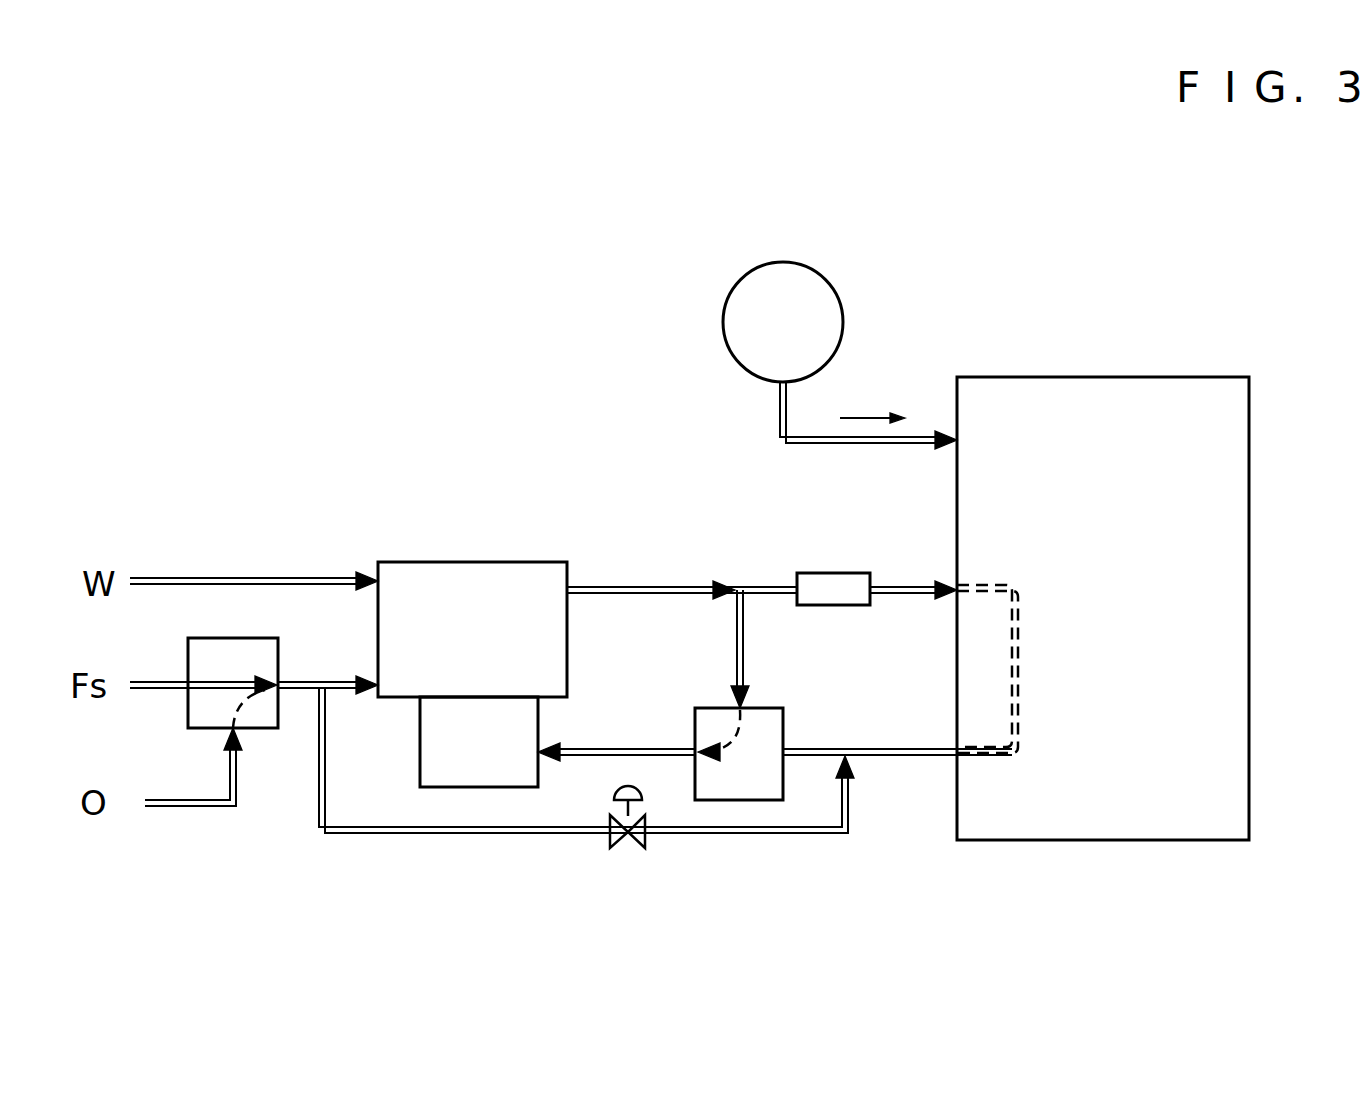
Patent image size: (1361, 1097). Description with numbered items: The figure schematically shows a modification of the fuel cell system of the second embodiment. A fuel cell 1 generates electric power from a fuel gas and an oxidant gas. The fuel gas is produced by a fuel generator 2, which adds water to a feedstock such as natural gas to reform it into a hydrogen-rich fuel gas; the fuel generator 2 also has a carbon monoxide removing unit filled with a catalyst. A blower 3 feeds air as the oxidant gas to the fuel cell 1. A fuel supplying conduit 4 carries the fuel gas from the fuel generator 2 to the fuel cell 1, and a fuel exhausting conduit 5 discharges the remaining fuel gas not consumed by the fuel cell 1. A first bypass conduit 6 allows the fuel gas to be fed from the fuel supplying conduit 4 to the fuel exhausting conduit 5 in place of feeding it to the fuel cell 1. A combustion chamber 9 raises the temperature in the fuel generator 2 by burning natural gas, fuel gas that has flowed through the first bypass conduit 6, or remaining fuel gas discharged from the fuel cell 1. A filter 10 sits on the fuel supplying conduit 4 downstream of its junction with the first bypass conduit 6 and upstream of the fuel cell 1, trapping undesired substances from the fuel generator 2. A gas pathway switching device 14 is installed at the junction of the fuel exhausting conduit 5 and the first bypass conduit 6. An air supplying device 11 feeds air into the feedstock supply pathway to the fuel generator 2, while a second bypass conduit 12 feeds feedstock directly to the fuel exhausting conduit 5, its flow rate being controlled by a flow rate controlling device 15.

The fuel cell 1 is at (1145, 395).
The fuel generator 2 is at (472, 629).
The blower 3 is at (840, 355).
The fuel supplying conduit 4 is at (763, 585).
The fuel exhausting conduit 5 is at (816, 750).
The first bypass conduit 6 is at (746, 648).
The combustion chamber 9 is at (479, 742).
The filter 10 is at (840, 575).
The air supplying device 11 is at (280, 650).
The second bypass conduit 12 is at (447, 834).
The gas pathway switching device 14 is at (783, 710).
The flow rate controlling device 15 is at (640, 848).